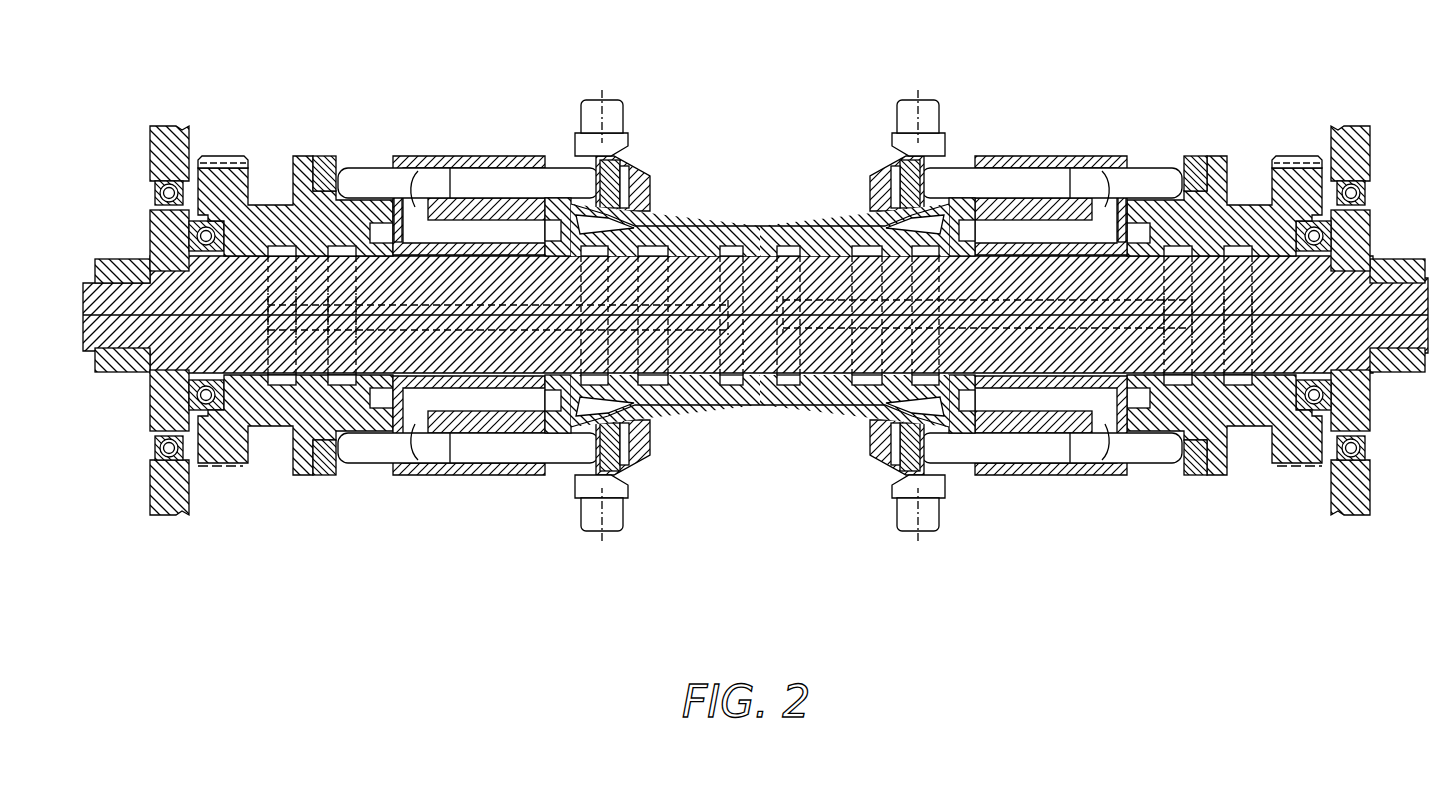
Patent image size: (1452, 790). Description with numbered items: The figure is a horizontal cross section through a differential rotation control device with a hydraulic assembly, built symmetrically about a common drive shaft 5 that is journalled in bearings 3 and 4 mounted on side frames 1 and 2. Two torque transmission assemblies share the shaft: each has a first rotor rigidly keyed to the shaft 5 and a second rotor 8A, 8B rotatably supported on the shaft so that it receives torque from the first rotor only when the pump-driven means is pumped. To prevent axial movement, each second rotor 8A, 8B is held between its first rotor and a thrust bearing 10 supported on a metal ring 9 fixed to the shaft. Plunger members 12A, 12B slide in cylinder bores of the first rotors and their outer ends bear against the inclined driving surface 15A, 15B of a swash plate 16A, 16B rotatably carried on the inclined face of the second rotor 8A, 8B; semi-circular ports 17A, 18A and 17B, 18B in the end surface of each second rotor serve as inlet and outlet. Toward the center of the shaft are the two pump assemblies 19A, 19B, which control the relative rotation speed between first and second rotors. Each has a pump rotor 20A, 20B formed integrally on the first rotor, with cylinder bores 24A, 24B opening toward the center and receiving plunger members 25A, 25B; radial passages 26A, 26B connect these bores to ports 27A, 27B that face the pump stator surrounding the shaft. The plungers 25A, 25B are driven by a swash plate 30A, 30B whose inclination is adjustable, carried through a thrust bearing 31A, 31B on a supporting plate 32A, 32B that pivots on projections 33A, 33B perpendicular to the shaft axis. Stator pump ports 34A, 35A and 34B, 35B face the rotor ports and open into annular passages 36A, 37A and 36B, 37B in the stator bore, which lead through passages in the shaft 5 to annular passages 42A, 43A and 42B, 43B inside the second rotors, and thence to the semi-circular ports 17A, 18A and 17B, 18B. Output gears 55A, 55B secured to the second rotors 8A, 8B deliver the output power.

The side frame 1 is at (143, 149).
The side frame 2 is at (1367, 136).
The bearing 3 is at (147, 184).
The bearing 4 is at (1362, 180).
The drive shaft 5 is at (82, 343).
The second rotor 8A is at (270, 425).
The second rotor 8B is at (1244, 425).
The metal ring 9 is at (143, 237).
The thrust bearing 10 is at (216, 236).
The plunger member 12A is at (356, 459).
The plunger member 12B is at (1143, 454).
The driving surface 15A is at (313, 148).
The driving surface 15B is at (1188, 148).
The swash plate 16A is at (312, 467).
The swash plate 16B is at (1185, 466).
The semi-circular port 17A is at (362, 224).
The semi-circular port 17B is at (1144, 223).
The semi-circular port 18A is at (390, 398).
The semi-circular port 18B is at (1112, 398).
The pump assembly 19A is at (540, 118).
The pump assembly 19B is at (957, 118).
The pump rotor 20A is at (478, 468).
The pump rotor 20B is at (1028, 464).
The cylinder bore 24A is at (416, 157).
The cylinder bore 24B is at (1081, 157).
The plunger member 25A is at (493, 168).
The plunger member 25B is at (1000, 165).
The radially extending passage 26A is at (386, 159).
The radially extending passage 26B is at (1118, 159).
The port 27A is at (478, 228).
The port 27B is at (975, 226).
The swash plate 30A is at (625, 148).
The swash plate 30B is at (871, 150).
The thrust bearing 31A is at (642, 182).
The thrust bearing 31B is at (862, 182).
The supporting plate 32A is at (642, 440).
The supporting plate 32B is at (860, 440).
The projection 33A is at (610, 92).
The projection 33B is at (895, 92).
The pump port 34A is at (548, 252).
The pump port 34B is at (954, 252).
The pump port 35A is at (544, 406).
The pump port 35B is at (965, 406).
The annular passage 36A is at (605, 314).
The annular passage 36B is at (916, 314).
The annular passage 37A is at (640, 222).
The annular passage 37B is at (860, 222).
The annular passage 42A is at (346, 252).
The annular passage 42B is at (1150, 252).
The annular passage 43A is at (268, 238).
The annular passage 43B is at (1238, 238).
The output gear 55A is at (217, 148).
The output gear 55B is at (1286, 148).